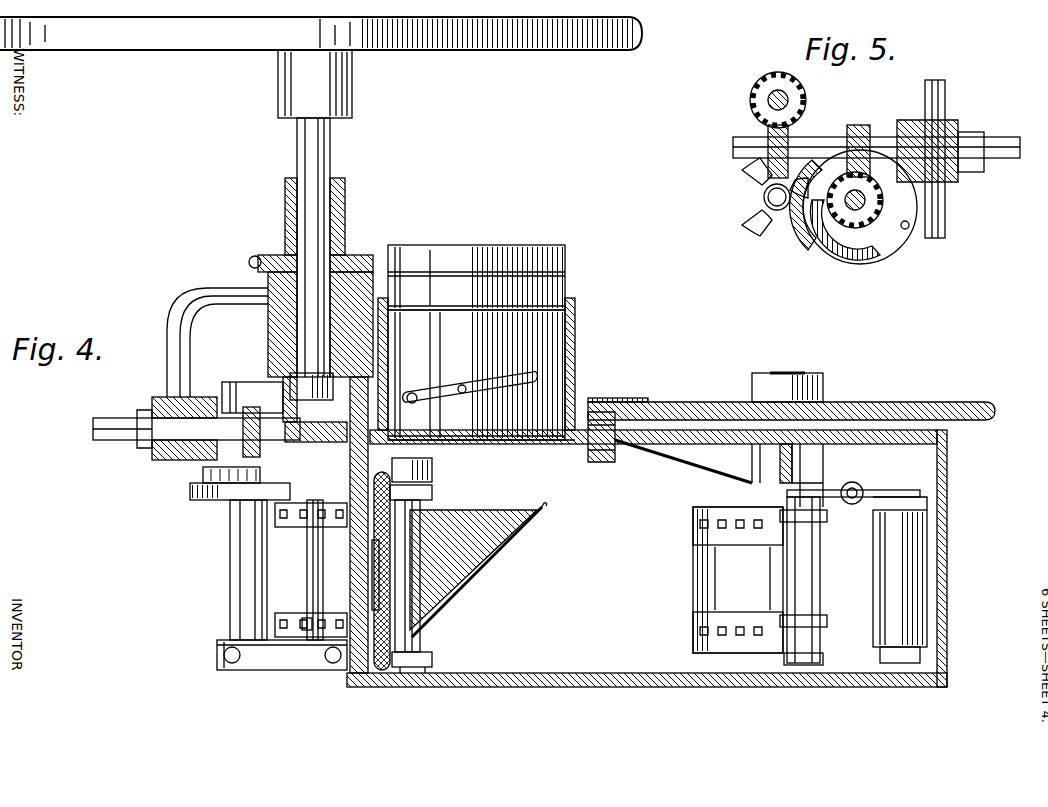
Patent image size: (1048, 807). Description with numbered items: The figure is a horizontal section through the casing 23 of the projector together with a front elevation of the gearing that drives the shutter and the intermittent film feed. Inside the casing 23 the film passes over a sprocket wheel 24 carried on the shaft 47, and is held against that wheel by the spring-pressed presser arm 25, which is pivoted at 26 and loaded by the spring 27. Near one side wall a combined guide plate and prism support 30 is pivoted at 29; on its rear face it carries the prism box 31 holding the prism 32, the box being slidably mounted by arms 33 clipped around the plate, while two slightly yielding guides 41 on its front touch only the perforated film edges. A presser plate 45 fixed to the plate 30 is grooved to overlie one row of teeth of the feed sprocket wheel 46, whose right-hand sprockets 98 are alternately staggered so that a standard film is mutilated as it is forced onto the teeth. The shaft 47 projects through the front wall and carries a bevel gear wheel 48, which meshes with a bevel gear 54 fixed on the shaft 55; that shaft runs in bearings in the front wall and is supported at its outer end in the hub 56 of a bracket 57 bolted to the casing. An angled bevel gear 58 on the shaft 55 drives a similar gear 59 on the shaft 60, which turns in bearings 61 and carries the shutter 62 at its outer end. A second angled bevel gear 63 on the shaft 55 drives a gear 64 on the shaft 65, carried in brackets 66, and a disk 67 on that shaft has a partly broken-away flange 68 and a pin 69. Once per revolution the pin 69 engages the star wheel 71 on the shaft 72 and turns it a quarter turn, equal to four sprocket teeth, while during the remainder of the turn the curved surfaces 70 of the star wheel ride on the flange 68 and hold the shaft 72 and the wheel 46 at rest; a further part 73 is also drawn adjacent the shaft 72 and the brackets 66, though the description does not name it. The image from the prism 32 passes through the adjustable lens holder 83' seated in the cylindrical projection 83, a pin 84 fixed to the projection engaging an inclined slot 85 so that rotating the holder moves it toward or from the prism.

In FIG. 4, the shutter 62 is at (573, 52).
In FIG. 4, the shaft 60 is at (300, 147).
In FIG. 5, the shaft 60 is at (790, 100).
In FIG. 4, the bearings 61 is at (346, 236).
In FIG. 4, the adjustable lens holder 83' is at (476, 259).
In FIG. 4, the cylindrical projection 83 is at (500, 369).
In FIG. 4, the pin 84 is at (466, 382).
In FIG. 4, the inclined slot 85 is at (416, 392).
In FIG. 4, the casing 23 is at (592, 688).
In FIG. 4, the bevel gear wheel 48 is at (930, 403).
In FIG. 4, the bevel gear 54 is at (605, 463).
In FIG. 4, the shaft 47 is at (789, 373).
In FIG. 4, the spring 27 is at (851, 483).
In FIG. 4, the pivot 26 is at (930, 498).
In FIG. 4, the sprocket wheel 24 is at (693, 571).
In FIG. 4, the presser arm 25 is at (787, 573).
In FIG. 4, the shaft 55 is at (115, 418).
In FIG. 5, the shaft 55 is at (733, 143).
In FIG. 4, the hub 56 is at (160, 459).
In FIG. 4, the angled bevel gear 63 is at (240, 405).
In FIG. 5, the angled bevel gear 63 is at (865, 125).
In FIG. 4, the brackets 66 is at (245, 382).
In FIG. 4, the angled bevel gear 59 is at (288, 380).
In FIG. 5, the angled bevel gear 59 is at (765, 85).
In FIG. 4, the star wheel 71 is at (300, 446).
In FIG. 5, the star wheel 71 is at (760, 206).
In FIG. 4, the flange 68 is at (200, 478).
In FIG. 5, the flange 68 is at (814, 243).
In FIG. 4, the disk 67 is at (210, 501).
In FIG. 5, the disk 67 is at (873, 264).
In FIG. 4, the shaft 65 is at (230, 577).
In FIG. 5, the shaft 65 is at (836, 258).
In FIG. 4, the shaft 72 is at (307, 567).
In FIG. 4, the clamp 73 is at (290, 528).
In FIG. 4, the presser plate 45 is at (372, 600).
In FIG. 4, the feed sprocket wheel 46 is at (275, 623).
In FIG. 4, the staggered sprockets 98 is at (306, 632).
In FIG. 4, the bracket 57 is at (190, 308).
In FIG. 4, the arms 33 is at (386, 470).
In FIG. 4, the pivot 29 is at (433, 470).
In FIG. 4, the yielding guides 41 is at (433, 496).
In FIG. 4, the prism 32 is at (484, 549).
In FIG. 4, the prism box 31 is at (472, 574).
In FIG. 4, the combined guide plate and prism support 30 is at (437, 611).
In FIG. 5, the angled bevel gear 58 is at (768, 126).
In FIG. 5, the pin 69 is at (909, 228).
In FIG. 5, the angled bevel gear 64 is at (870, 222).
In FIG. 5, the curved surfaces 70 is at (763, 197).